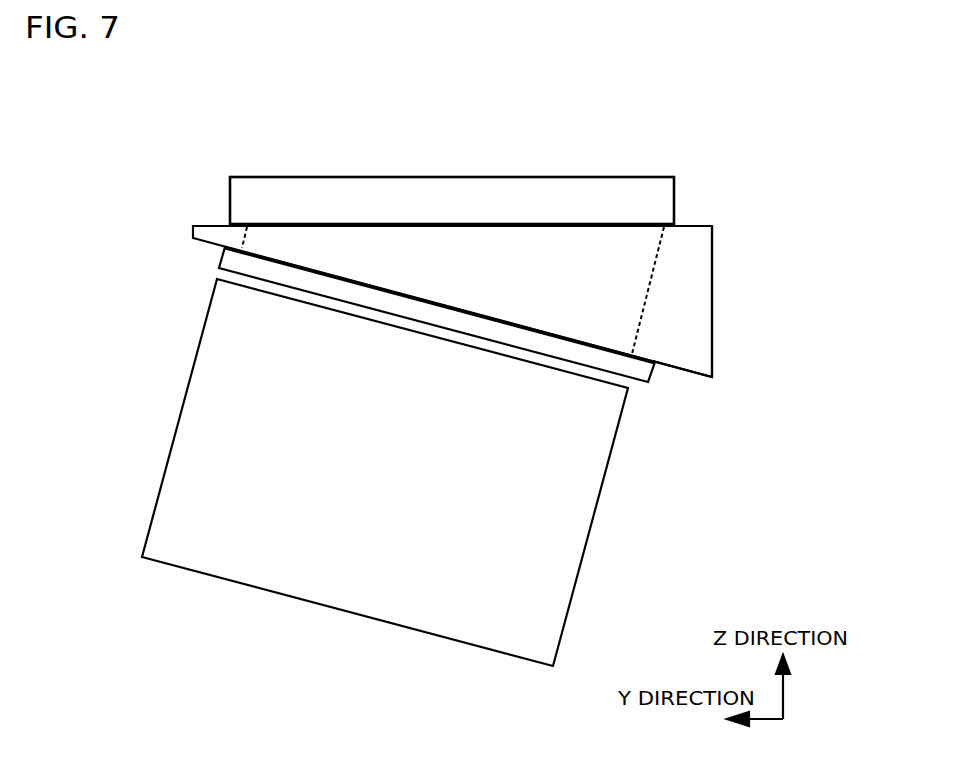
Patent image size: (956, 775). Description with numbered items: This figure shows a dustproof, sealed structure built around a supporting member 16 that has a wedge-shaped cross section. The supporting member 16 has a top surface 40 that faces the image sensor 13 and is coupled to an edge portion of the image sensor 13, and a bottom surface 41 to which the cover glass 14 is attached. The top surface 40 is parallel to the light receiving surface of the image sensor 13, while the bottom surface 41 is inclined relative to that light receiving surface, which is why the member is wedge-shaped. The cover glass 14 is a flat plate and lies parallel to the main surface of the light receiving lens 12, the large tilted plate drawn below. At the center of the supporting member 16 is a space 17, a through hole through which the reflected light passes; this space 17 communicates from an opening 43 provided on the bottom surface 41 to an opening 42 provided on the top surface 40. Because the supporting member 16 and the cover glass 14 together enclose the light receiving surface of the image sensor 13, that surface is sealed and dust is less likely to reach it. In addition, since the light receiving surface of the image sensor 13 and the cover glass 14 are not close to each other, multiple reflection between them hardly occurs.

The light receiving lens 12 is at (230, 428).
The image sensor 13 is at (247, 197).
The cover glass 14 is at (228, 255).
The supporting member 16 is at (697, 295).
The space 17 is at (507, 282).
The top surface 40 is at (699, 223).
The bottom surface 41 is at (678, 370).
The opening 42 is at (602, 224).
The opening 43 is at (582, 342).